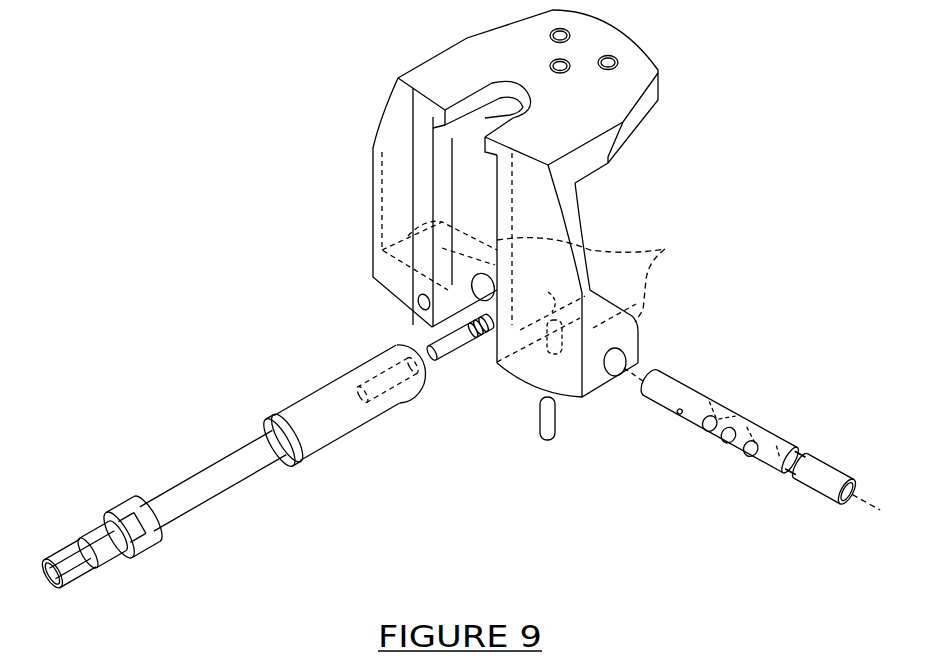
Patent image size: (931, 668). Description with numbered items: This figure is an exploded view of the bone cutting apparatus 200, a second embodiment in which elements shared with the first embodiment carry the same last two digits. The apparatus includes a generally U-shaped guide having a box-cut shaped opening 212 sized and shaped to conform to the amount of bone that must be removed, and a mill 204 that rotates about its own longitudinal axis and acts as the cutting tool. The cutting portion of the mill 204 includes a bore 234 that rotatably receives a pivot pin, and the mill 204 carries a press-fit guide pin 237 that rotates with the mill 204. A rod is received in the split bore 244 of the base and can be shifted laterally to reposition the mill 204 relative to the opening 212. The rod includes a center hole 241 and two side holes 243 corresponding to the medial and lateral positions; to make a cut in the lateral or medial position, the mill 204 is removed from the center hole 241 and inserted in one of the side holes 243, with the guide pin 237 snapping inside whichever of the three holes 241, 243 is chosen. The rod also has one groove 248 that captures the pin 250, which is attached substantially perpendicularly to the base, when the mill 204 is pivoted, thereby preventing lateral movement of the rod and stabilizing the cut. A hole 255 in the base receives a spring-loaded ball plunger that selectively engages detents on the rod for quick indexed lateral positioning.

The bone cutting apparatus 200 is at (300, 93).
The mill 204 is at (223, 523).
The box-cut opening 212 is at (473, 178).
The bore 234 is at (393, 403).
The press-fit guide pin 237 is at (433, 338).
The center hole 241 is at (717, 458).
The side holes 243 is at (705, 423).
The split bore 244 is at (599, 270).
The groove 248 is at (808, 452).
The pin 250 is at (547, 445).
The hole 255 is at (415, 302).